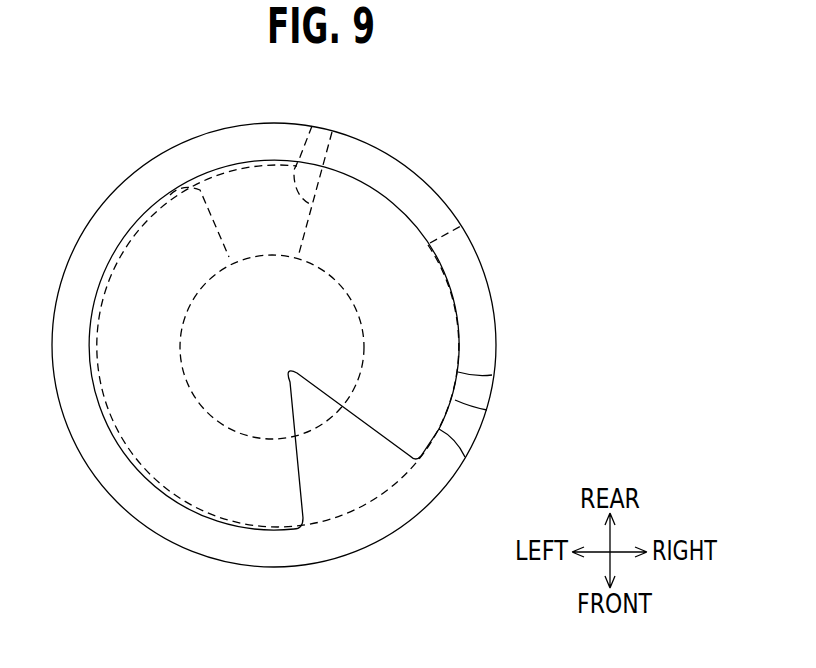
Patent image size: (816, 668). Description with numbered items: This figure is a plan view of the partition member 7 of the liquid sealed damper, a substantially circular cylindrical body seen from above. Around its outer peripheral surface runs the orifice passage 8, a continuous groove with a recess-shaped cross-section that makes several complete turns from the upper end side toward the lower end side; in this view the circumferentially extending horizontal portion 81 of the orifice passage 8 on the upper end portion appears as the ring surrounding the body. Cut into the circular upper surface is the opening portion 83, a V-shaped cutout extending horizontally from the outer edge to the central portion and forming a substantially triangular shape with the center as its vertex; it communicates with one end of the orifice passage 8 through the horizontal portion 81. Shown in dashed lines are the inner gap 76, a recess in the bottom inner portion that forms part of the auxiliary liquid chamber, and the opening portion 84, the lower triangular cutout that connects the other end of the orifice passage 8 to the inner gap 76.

The partition member 7 is at (459, 157).
The inner gap 76 is at (317, 329).
The orifice passage 8 is at (347, 361).
The horizontal portions 81 is at (254, 548).
The opening portion 83 is at (302, 488).
The opening portion 84 is at (312, 126).